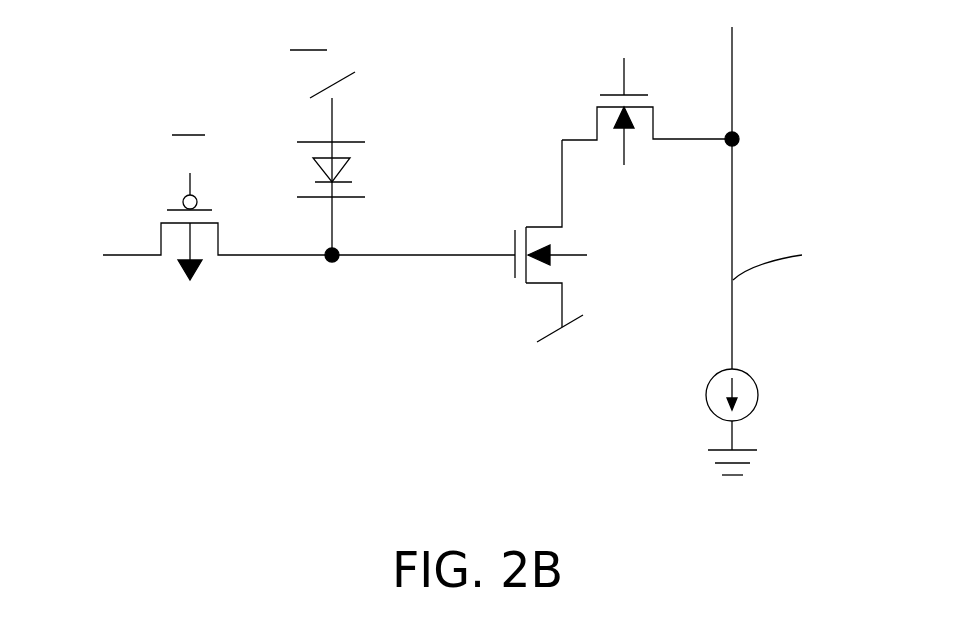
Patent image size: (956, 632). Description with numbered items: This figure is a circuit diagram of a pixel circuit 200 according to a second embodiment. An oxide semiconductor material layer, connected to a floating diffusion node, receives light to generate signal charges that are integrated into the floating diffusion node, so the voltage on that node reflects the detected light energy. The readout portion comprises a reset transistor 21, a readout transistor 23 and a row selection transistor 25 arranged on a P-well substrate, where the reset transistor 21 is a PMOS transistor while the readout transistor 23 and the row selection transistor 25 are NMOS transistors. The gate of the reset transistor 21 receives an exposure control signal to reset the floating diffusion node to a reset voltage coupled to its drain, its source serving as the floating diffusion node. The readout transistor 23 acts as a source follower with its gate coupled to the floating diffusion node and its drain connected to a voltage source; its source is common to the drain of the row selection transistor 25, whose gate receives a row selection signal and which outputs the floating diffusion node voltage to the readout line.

The pixel circuit 200 is at (135, 37).
The reset transistor 21 is at (158, 198).
The readout transistor 23 is at (520, 295).
The row selection transistor 25 is at (652, 80).